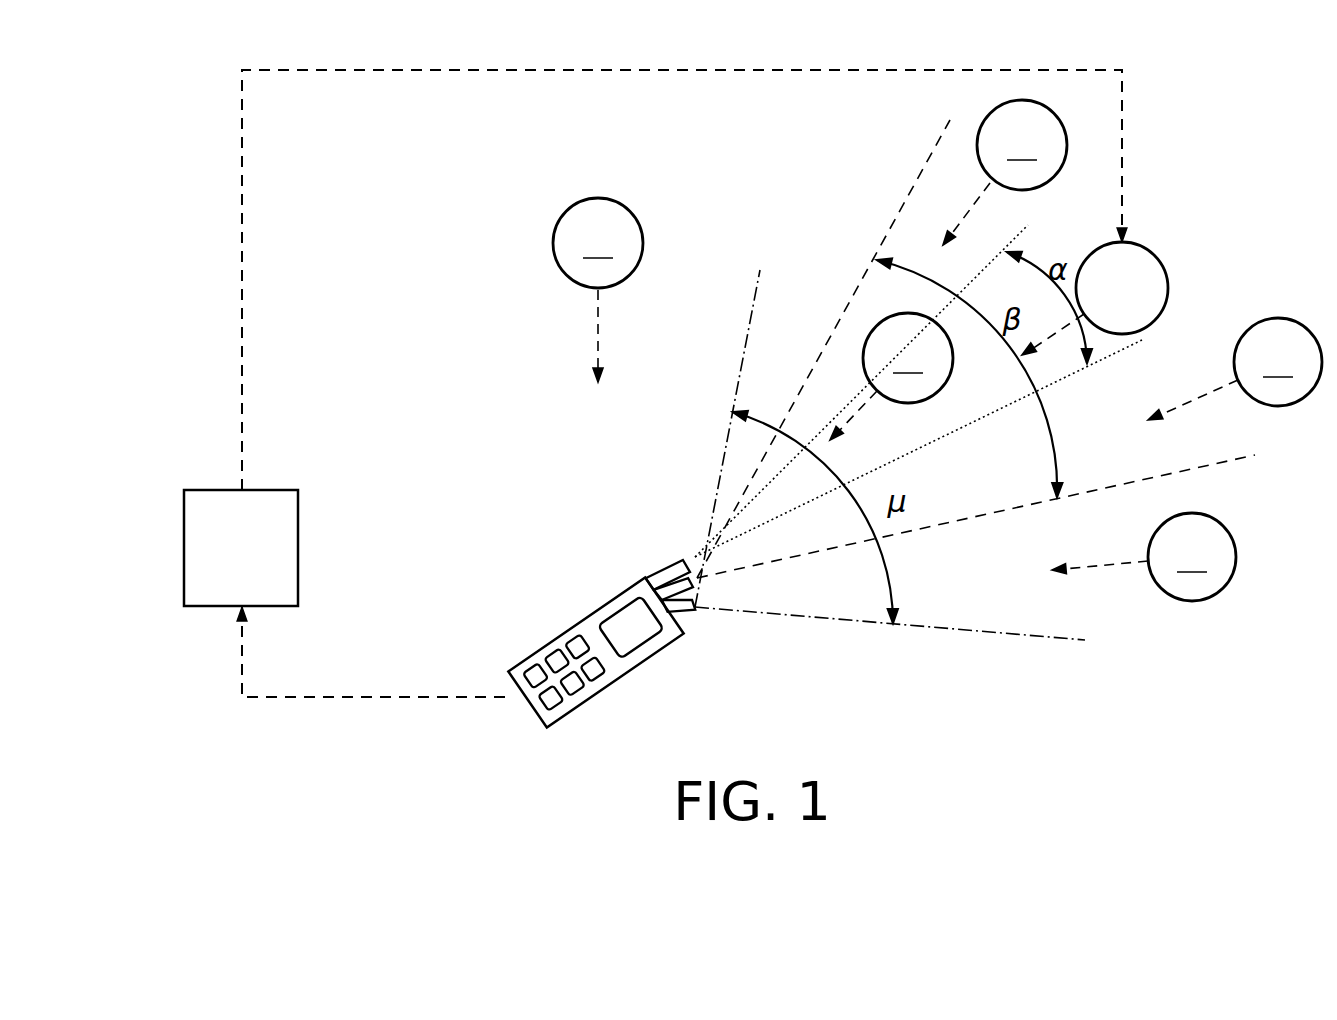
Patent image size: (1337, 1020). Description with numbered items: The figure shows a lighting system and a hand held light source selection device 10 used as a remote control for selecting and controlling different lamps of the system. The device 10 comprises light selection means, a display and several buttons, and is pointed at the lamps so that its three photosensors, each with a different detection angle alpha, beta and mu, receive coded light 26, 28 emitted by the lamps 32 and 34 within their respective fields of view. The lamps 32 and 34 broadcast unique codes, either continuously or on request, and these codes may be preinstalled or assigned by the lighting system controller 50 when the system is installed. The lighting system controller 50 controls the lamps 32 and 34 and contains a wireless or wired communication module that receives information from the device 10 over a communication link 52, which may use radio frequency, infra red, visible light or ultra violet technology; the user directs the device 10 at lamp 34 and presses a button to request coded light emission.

The light source selection device 10 is at (599, 620).
The light 26 is at (598, 333).
The light 28 is at (1050, 340).
The lamp 32 is at (937, 350).
The lamp 34 is at (1107, 303).
The lighting system controller 50 is at (226, 565).
The communication link 52 is at (682, 384).